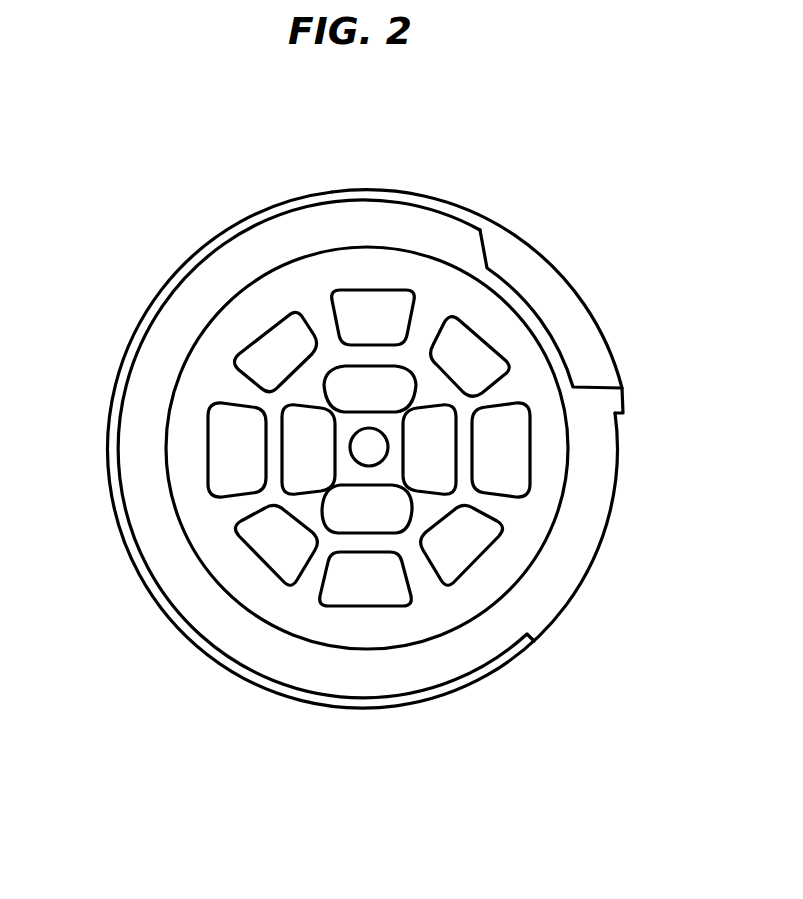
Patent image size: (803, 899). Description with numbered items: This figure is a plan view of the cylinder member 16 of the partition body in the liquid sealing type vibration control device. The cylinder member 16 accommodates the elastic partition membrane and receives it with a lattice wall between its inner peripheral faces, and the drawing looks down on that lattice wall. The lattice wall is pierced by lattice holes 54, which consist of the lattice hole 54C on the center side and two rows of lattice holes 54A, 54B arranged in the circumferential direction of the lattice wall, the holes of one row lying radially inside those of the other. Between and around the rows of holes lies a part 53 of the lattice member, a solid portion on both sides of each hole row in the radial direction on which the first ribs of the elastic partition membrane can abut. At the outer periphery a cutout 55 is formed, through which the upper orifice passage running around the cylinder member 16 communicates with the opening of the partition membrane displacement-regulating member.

The cylinder member 16 is at (357, 180).
The part of the lattice member 53 is at (190, 446).
The lattice holes 54 is at (385, 427).
The lattice holes 54A is at (399, 521).
The lattice holes 54B is at (218, 420).
The lattice hole 54C is at (383, 439).
The cutout 55 is at (531, 268).